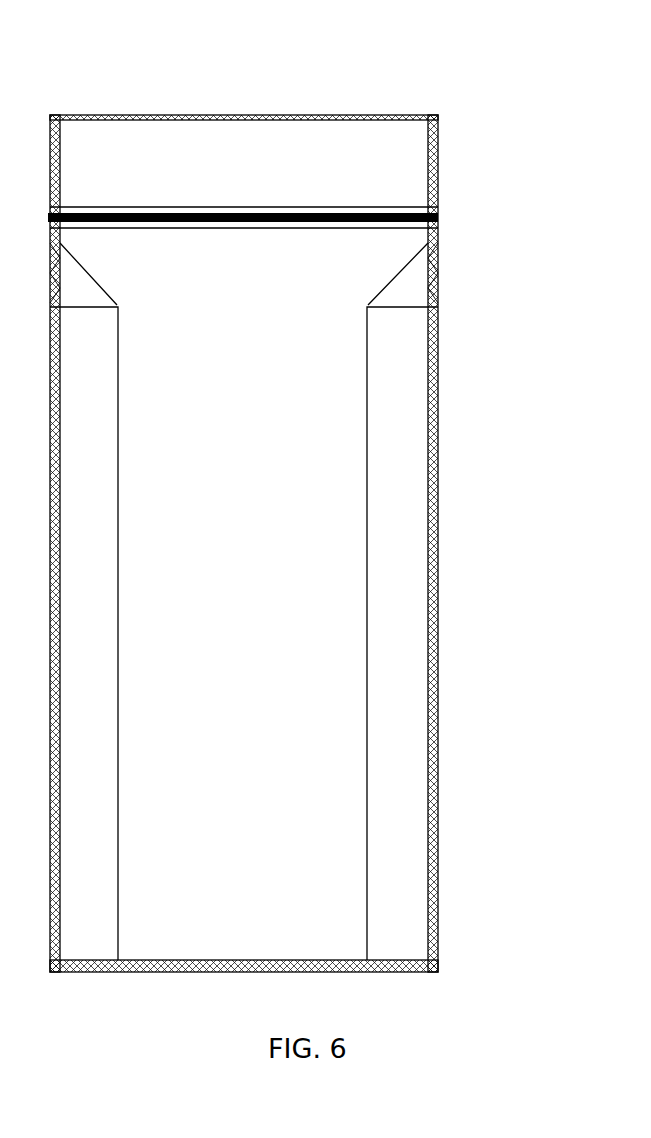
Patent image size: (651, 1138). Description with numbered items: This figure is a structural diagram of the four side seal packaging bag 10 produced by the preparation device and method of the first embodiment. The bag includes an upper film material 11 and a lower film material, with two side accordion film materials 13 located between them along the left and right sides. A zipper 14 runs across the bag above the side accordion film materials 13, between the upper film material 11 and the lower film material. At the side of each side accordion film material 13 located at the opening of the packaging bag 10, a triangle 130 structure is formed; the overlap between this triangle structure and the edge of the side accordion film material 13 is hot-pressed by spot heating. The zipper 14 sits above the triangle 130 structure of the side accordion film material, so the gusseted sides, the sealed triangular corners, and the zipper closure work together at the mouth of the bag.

The four side seal packaging bag 10 is at (60, 38).
The upper film material 11 is at (364, 149).
The zipper 14 is at (410, 215).
The triangle structure 130 is at (409, 285).
The side accordion film material 13 is at (407, 643).